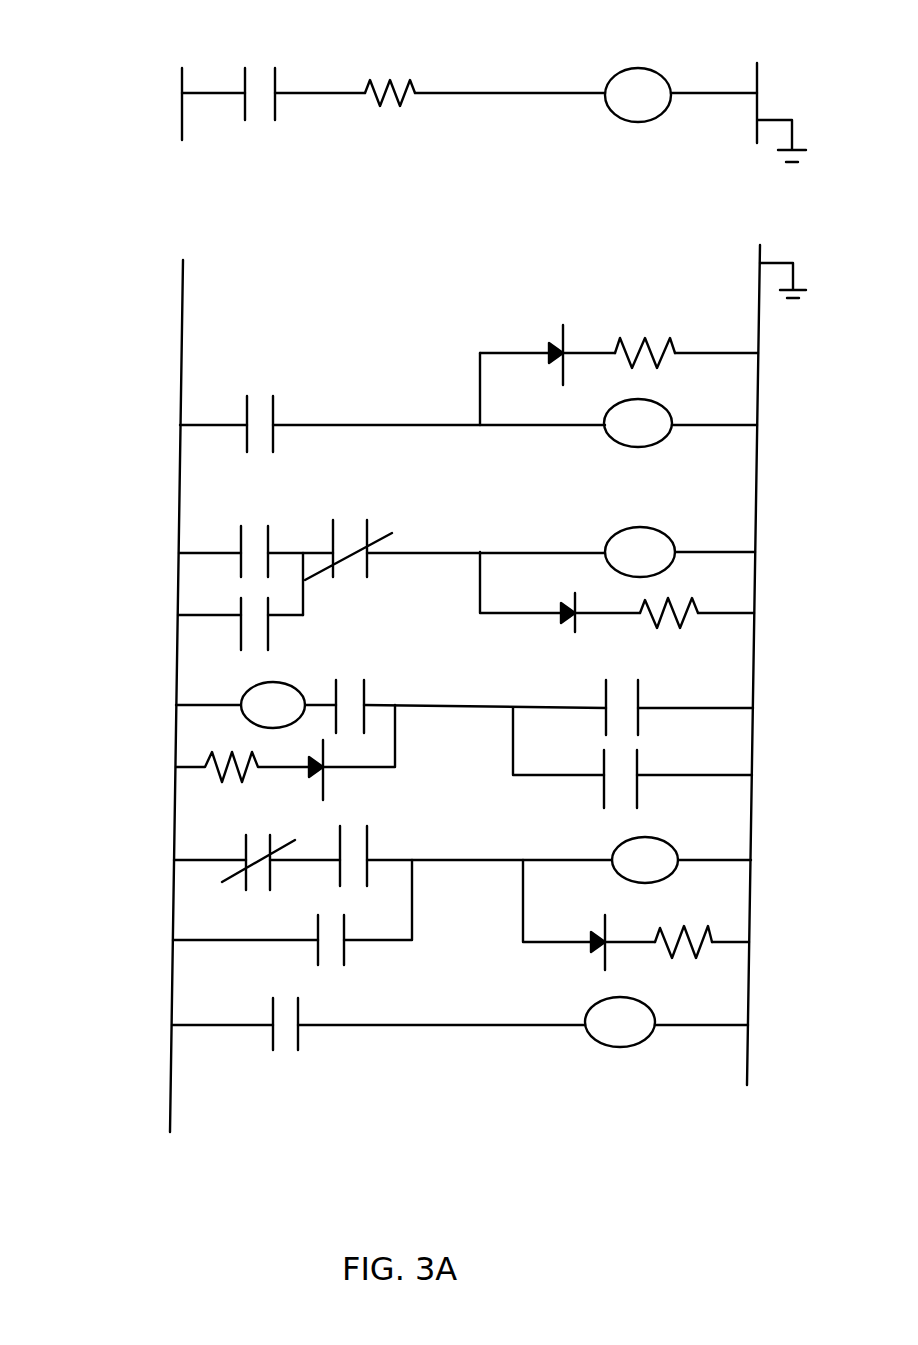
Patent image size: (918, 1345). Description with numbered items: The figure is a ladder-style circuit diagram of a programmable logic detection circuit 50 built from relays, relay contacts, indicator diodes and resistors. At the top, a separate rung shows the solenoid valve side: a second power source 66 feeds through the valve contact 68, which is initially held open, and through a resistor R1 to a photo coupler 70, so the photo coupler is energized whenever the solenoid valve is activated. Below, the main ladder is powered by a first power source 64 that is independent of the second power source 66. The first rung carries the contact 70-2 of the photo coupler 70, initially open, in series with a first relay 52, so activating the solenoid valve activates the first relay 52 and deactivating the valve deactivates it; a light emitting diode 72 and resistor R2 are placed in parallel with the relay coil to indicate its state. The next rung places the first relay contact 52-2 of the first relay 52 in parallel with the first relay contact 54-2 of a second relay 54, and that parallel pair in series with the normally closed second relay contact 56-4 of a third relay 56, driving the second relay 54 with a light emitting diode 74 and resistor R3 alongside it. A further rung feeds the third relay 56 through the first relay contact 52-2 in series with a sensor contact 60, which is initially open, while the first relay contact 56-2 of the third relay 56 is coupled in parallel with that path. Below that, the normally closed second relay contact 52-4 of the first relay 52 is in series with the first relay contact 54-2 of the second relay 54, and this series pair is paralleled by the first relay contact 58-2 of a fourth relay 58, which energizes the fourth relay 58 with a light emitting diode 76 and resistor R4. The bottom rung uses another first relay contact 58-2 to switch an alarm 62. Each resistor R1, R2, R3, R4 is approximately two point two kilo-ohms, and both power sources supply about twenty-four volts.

The detection circuit 50 is at (112, 410).
The first relay 52 is at (648, 445).
The first relay contact 52-2 is at (241, 532).
The second relay contact 52-4 is at (246, 848).
The second relay 54 is at (615, 532).
The first relay contact 54-2 is at (241, 628).
The third relay 56 is at (288, 682).
The first relay contact 56-2 is at (638, 802).
The second relay contact 56-4 is at (333, 536).
The fourth relay 58 is at (672, 876).
The first relay contact 58-2 is at (348, 962).
The sensor contact 60 is at (640, 686).
The alarm 62 is at (628, 1050).
The first power source 64 is at (183, 280).
The second power source 66 is at (182, 74).
The valve contact 68 is at (245, 78).
The photo coupler 70 is at (615, 80).
The contact 70-2 is at (247, 405).
The light emitting diode 72 is at (560, 340).
The light emitting diode 74 is at (570, 636).
The light emitting diode 76 is at (598, 962).
The resistor R1 is at (374, 56).
The resistor R2 is at (632, 319).
The resistor R3 is at (648, 636).
The resistor R4 is at (690, 950).